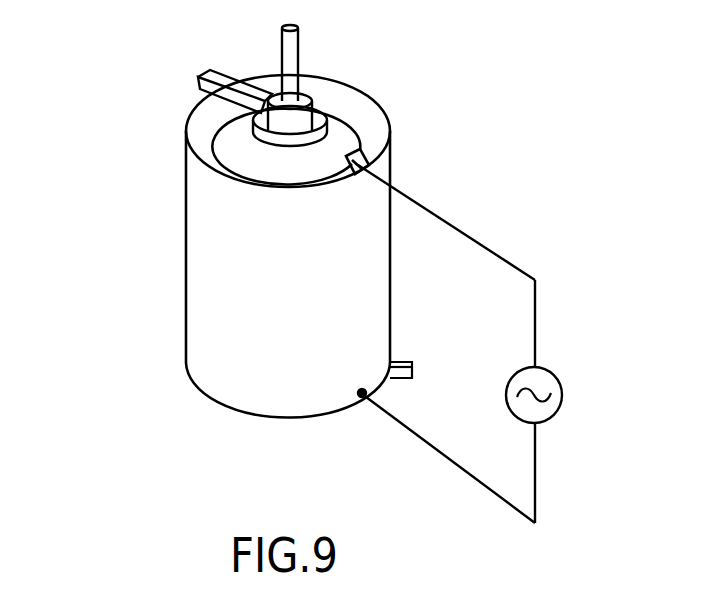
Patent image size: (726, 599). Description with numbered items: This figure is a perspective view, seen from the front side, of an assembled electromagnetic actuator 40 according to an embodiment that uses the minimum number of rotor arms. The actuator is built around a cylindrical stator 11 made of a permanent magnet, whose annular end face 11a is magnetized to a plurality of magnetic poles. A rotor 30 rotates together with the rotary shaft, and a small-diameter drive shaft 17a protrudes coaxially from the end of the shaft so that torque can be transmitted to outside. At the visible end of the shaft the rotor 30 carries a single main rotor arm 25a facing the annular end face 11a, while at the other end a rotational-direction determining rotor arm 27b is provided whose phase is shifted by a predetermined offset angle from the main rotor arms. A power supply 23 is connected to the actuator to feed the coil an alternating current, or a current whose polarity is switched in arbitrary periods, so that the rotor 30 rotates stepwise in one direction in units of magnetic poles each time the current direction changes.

The stator 11 is at (203, 223).
The annular end face 11a is at (203, 128).
The drive shaft 17a is at (292, 50).
The main rotor arm 25a is at (223, 67).
The rotational-direction determining rotor arm 27b is at (413, 359).
The rotor 30 is at (188, 60).
The electromagnetic actuator 40 is at (471, 97).
The power supply 23 is at (556, 413).